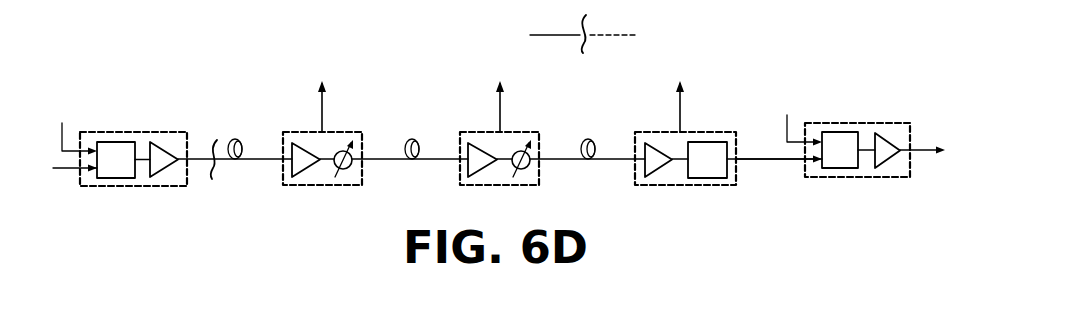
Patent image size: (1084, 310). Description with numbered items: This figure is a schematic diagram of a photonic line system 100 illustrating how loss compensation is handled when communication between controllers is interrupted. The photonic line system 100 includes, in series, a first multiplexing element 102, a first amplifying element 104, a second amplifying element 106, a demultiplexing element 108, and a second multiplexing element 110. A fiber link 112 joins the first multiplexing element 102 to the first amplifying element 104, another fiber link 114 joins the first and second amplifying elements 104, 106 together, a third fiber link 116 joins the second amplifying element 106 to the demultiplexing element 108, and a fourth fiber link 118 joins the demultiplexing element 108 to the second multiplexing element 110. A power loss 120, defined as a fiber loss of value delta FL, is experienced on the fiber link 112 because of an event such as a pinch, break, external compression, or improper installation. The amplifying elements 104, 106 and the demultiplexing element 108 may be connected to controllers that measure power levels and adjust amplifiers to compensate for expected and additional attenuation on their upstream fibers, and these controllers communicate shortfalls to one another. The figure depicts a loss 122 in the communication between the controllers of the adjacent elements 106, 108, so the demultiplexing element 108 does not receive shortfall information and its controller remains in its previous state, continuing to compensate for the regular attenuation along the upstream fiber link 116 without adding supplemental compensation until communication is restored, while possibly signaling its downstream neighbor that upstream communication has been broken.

The photonic line system 100 is at (178, 237).
The first multiplexing element 102 is at (108, 132).
The first amplifying element 104 is at (313, 185).
The second amplifying element 106 is at (500, 185).
The demultiplexing element 108 is at (663, 185).
The second multiplexing element 110 is at (883, 177).
The fiber link 112 is at (255, 162).
The fiber link 114 is at (440, 158).
The third fiber link 116 is at (622, 158).
The fourth fiber link 118 is at (767, 163).
The power loss 120 is at (215, 141).
The loss 122 is at (585, 15).